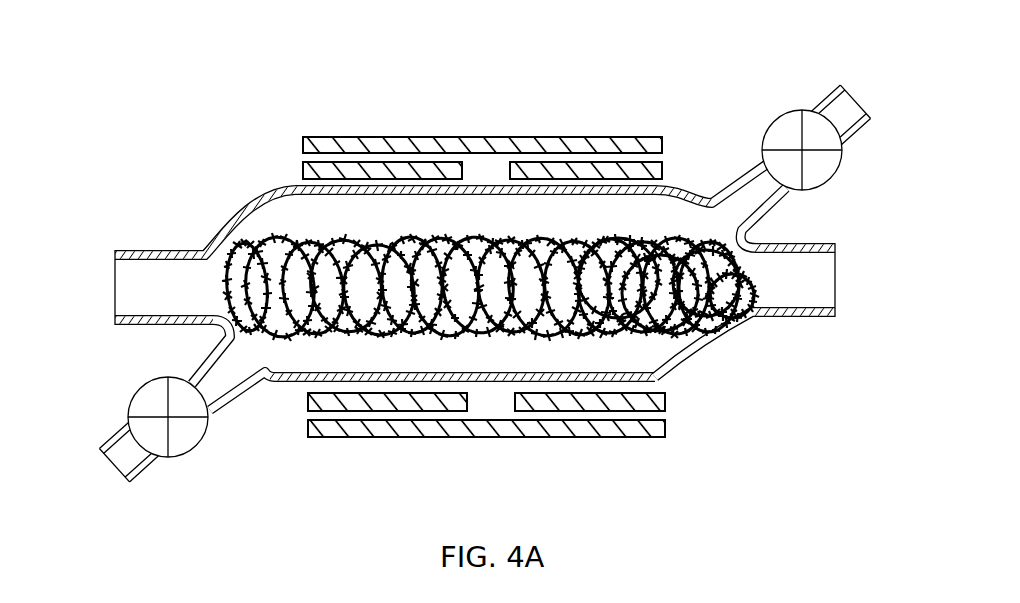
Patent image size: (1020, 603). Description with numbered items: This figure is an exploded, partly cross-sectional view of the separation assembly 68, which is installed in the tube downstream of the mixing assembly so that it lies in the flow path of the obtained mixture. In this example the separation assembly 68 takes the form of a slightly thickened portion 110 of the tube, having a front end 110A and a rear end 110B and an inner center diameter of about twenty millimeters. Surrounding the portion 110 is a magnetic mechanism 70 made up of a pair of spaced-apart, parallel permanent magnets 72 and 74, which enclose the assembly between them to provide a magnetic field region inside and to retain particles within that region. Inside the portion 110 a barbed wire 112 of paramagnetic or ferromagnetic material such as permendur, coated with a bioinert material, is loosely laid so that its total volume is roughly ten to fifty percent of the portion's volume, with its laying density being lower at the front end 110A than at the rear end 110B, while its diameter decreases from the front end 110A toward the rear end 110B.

The separation assembly 68 is at (219, 147).
The magnetic mechanism 70 is at (570, 118).
The permanent magnet 72 is at (518, 172).
The permanent magnet 74 is at (524, 398).
The thickened portion 110 is at (627, 373).
The front end 110A is at (222, 267).
The rear end 110B is at (758, 273).
The barbed wire 112 is at (381, 235).